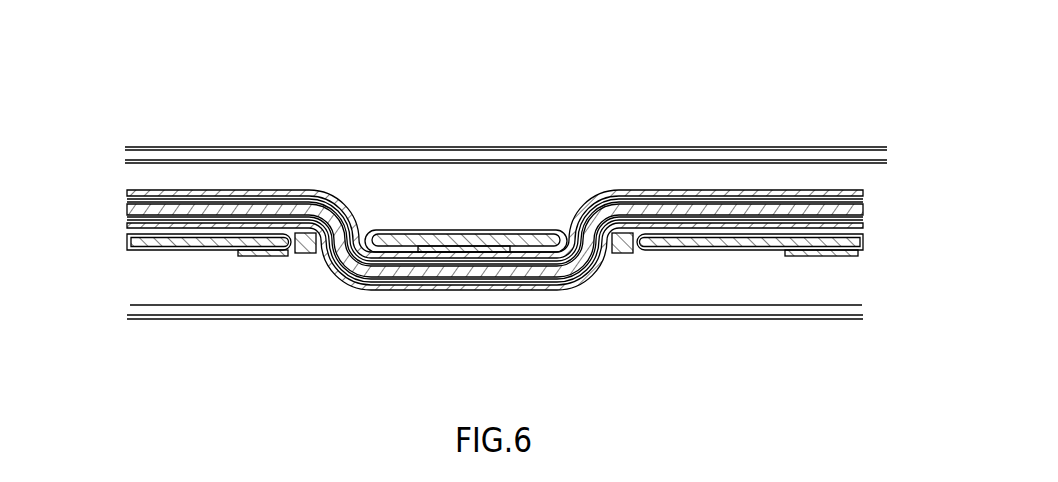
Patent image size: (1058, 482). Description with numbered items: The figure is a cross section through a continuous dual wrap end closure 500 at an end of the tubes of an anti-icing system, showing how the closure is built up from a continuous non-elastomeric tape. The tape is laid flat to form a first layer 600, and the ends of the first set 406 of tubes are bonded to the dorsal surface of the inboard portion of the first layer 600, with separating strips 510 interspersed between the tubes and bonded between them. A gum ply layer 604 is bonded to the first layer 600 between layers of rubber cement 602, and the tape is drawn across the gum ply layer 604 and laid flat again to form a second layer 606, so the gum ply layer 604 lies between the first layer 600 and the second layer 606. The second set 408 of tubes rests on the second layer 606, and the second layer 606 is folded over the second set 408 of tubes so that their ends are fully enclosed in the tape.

The continuous dual wrap end closure 500 is at (666, 60).
The second layer 606 is at (125, 147).
The rubber cement 602 is at (125, 161).
The gum ply layer 604 is at (118, 208).
The first layer 600 is at (118, 226).
The first set of tubes 406 is at (118, 241).
The second set of tubes 408 is at (427, 230).
The separating strips 510 is at (306, 254).